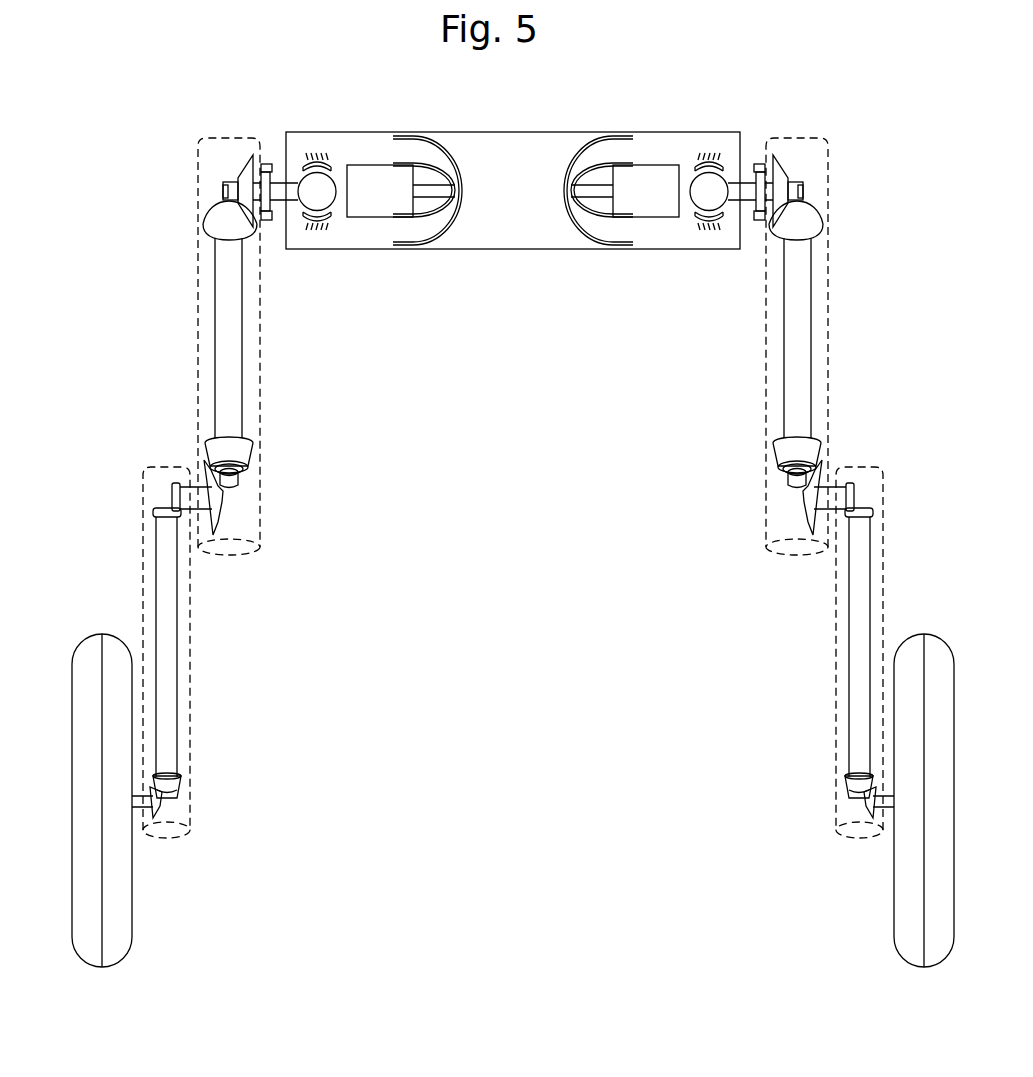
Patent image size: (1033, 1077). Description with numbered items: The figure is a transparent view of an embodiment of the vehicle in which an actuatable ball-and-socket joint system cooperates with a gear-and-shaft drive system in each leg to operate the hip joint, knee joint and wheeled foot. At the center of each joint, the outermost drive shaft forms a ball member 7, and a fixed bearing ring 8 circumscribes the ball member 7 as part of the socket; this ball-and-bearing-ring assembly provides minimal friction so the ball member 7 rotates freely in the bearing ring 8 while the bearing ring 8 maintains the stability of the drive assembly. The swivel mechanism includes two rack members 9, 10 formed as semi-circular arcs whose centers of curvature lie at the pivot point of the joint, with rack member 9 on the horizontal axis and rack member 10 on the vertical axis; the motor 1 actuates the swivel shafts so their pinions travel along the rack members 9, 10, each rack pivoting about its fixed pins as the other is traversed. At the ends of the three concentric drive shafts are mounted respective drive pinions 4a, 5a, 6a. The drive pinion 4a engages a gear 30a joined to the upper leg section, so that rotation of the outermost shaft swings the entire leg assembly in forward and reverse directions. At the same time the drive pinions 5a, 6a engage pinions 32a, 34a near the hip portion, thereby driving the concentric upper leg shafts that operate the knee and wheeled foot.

The motor 1 is at (374, 202).
The ball member 7 is at (324, 184).
The bearing ring 8 is at (305, 158).
The rack member 9 is at (433, 214).
The rack member 10 is at (451, 151).
The gear 30a is at (270, 222).
The drive pinion 4a is at (281, 164).
The drive pinion 5a is at (250, 164).
The drive pinion 6a is at (223, 185).
The pinion 34a is at (223, 197).
The pinion 32a is at (228, 212).